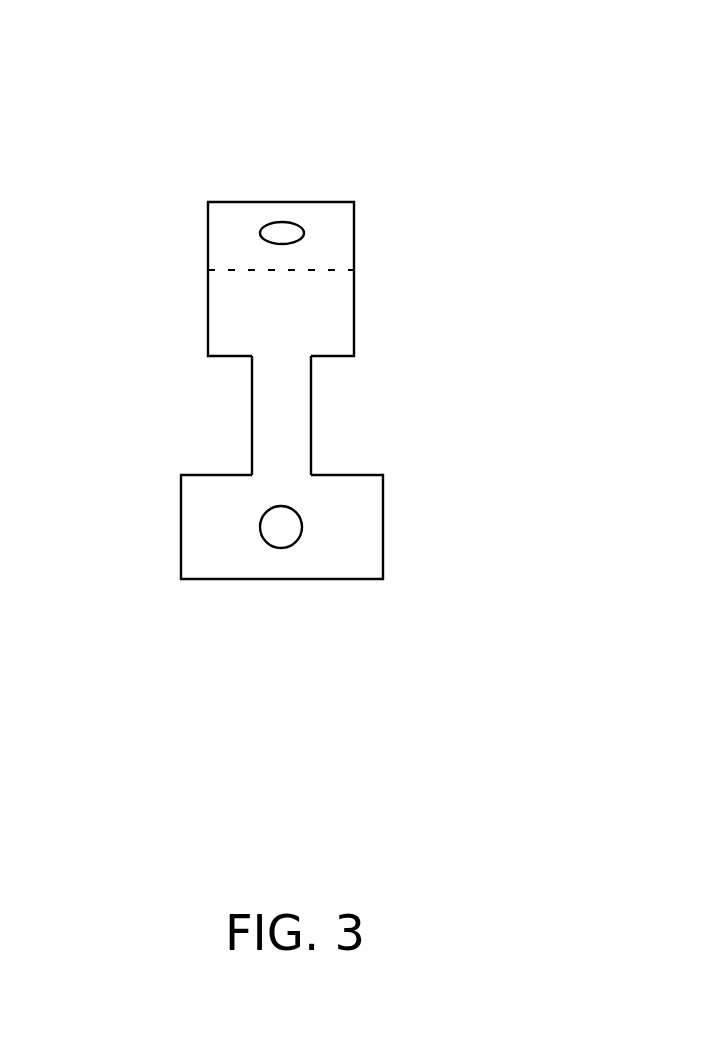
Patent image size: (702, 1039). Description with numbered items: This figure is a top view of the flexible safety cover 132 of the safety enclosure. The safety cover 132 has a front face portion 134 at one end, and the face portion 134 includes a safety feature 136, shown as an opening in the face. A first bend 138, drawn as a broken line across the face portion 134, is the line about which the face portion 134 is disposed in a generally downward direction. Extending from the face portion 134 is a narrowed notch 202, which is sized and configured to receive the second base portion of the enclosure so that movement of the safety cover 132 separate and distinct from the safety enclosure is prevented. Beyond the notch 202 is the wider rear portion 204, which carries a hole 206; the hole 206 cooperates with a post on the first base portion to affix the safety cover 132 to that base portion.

The flexible safety cover 132 is at (415, 110).
The face portion 134 is at (222, 220).
The safety feature 136 is at (282, 232).
The bend 138 is at (210, 272).
The notch 202 is at (231, 408).
The rear portion 204 is at (360, 530).
The hole 206 is at (281, 527).